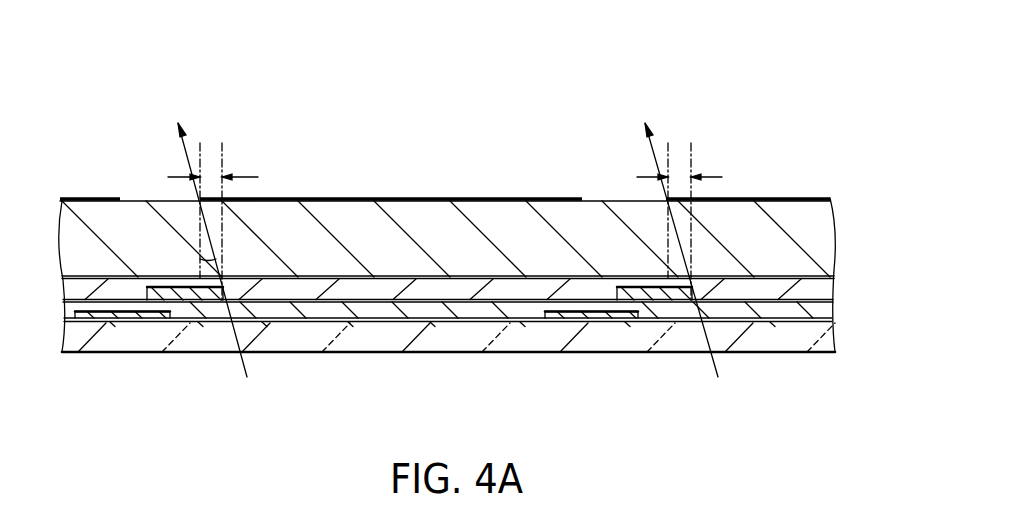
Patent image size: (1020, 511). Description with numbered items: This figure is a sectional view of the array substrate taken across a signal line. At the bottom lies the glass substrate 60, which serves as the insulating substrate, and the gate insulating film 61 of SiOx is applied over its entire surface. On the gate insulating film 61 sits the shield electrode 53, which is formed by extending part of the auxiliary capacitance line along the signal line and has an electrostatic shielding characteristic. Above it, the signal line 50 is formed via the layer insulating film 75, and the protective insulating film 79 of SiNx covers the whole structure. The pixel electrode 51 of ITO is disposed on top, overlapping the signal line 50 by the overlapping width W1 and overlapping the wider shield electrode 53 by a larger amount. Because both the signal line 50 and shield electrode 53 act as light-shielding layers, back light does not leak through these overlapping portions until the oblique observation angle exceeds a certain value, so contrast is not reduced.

The pixel electrode 51 is at (104, 197).
The signal line 50 is at (207, 291).
The shield electrode 53 is at (126, 313).
The protective insulating film 79 is at (827, 286).
The layer insulating film 75 is at (827, 310).
The gate insulating film 61 is at (823, 325).
The glass substrate 60 is at (773, 342).
The overlapping width W1 is at (445, 219).